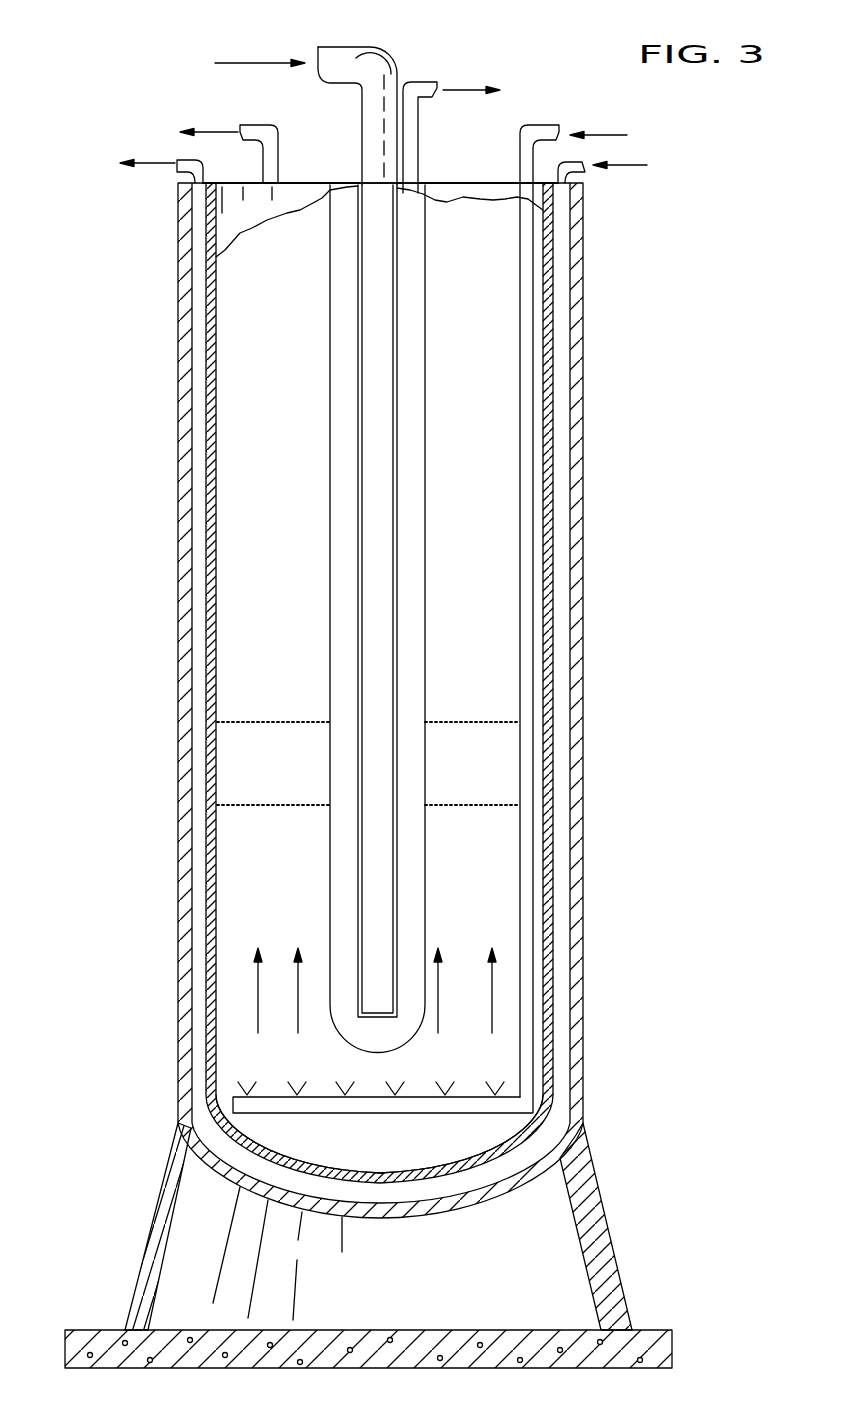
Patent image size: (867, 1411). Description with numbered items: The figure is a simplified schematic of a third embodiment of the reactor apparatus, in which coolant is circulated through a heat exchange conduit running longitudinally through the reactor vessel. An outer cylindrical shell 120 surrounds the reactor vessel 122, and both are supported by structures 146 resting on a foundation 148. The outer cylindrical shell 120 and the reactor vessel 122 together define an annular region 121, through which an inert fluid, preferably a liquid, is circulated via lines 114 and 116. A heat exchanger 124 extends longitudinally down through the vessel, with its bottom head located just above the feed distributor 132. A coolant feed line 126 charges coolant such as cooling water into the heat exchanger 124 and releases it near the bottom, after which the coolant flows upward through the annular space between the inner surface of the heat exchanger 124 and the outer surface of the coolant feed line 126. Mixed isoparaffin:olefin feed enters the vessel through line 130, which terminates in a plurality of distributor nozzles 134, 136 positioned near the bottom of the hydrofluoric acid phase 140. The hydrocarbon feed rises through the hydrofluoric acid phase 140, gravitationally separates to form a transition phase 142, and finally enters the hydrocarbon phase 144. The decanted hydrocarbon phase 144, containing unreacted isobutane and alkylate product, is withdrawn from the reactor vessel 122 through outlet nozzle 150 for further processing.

The line 114 is at (583, 174).
The line 116 is at (177, 172).
The outer cylindrical shell 120 is at (178, 375).
The annular region 121 is at (205, 460).
The reactor vessel 122 is at (457, 1178).
The heat exchanger 124 is at (347, 465).
The coolant feed line 126 is at (343, 47).
The line 130 is at (542, 122).
The feed distributor 132 is at (385, 1113).
The distributor nozzle 134 is at (298, 1085).
The distributor nozzle 136 is at (442, 1087).
The hydrofluoric acid phase 140 is at (292, 875).
The transition phase 142 is at (292, 782).
The hydrocarbon phase 144 is at (292, 702).
The structures 146 is at (150, 1207).
The foundation 148 is at (125, 1330).
The outlet nozzle 150 is at (255, 123).